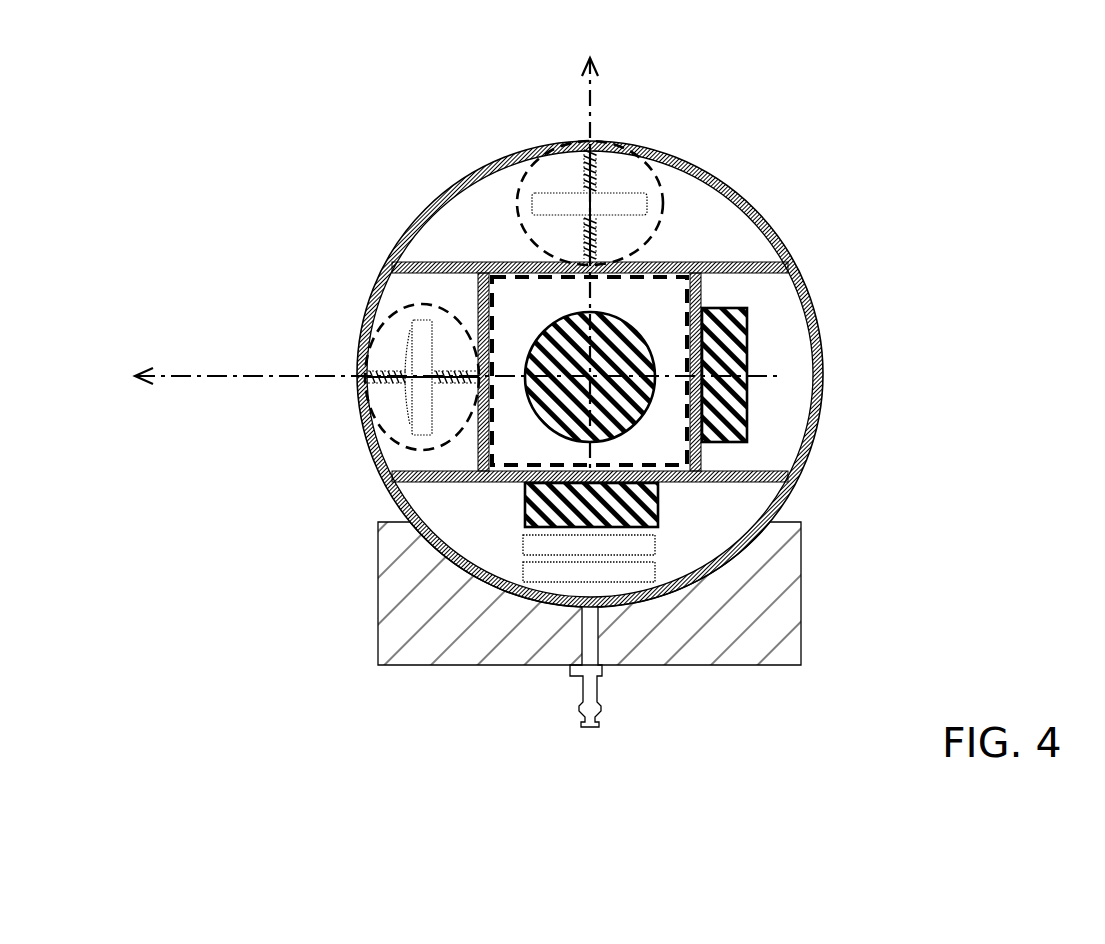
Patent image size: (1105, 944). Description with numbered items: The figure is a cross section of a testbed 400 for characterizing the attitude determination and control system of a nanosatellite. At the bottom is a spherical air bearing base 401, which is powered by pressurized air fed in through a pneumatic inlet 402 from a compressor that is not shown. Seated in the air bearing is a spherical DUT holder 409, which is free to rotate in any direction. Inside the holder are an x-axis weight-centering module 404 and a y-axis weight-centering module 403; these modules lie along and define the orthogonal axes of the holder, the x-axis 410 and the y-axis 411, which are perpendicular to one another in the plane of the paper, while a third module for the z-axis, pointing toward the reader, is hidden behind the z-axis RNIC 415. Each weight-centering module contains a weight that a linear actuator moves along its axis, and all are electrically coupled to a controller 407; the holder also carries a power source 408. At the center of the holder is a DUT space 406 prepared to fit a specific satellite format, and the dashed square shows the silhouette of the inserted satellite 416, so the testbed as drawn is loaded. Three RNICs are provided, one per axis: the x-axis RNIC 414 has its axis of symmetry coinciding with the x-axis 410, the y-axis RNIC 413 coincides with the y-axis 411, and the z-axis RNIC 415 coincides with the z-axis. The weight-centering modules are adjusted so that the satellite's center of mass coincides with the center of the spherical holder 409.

The testbed 400 is at (340, 195).
The spherical air bearing base 401 is at (393, 563).
The pneumatic inlet 402 is at (590, 698).
The y-axis weight-centering module 403 is at (655, 173).
The x-axis weight-centering module 404 is at (380, 422).
The DUT space 406 is at (670, 452).
The controller 407 is at (657, 547).
The power source 408 is at (657, 575).
The spherical DUT holder 409 is at (367, 308).
The x-axis 410 is at (172, 375).
The y-axis 411 is at (583, 73).
The y-axis RNIC 413 is at (525, 520).
The x-axis RNIC 414 is at (745, 332).
The z-axis RNIC 415 is at (650, 343).
The satellite 416 is at (662, 277).